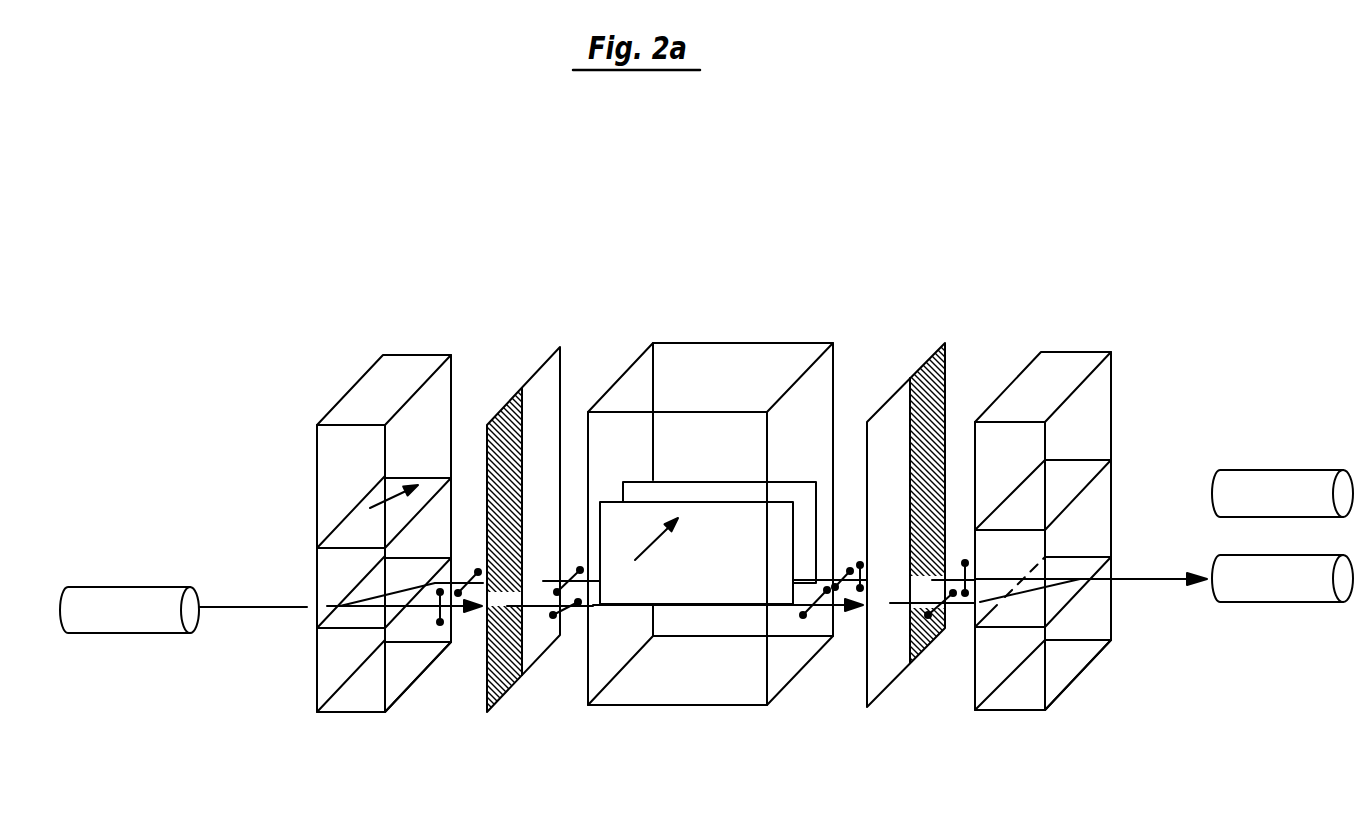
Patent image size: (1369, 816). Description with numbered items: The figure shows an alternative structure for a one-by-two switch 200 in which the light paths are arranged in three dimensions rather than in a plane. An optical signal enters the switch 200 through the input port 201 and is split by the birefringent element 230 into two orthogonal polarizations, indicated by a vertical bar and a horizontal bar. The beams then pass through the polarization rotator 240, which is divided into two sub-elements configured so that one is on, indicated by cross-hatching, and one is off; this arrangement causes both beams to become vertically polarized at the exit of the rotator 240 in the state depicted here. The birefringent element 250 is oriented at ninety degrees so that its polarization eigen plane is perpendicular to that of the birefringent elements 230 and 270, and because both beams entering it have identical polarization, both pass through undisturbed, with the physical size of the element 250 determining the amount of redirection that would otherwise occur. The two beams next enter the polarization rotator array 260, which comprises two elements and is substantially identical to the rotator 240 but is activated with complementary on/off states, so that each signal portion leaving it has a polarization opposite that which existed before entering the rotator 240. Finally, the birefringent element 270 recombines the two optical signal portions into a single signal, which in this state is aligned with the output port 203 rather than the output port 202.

The 1×2 switch 200 is at (1009, 167).
The input port 201 is at (125, 587).
The output port 202 is at (1262, 470).
The output port 203 is at (1268, 602).
The birefringent element 230 is at (414, 355).
The polarization rotator 240 is at (541, 347).
The birefringent element 250 is at (715, 343).
The polarization rotator array 260 is at (910, 372).
The birefringent element 270 is at (1063, 352).